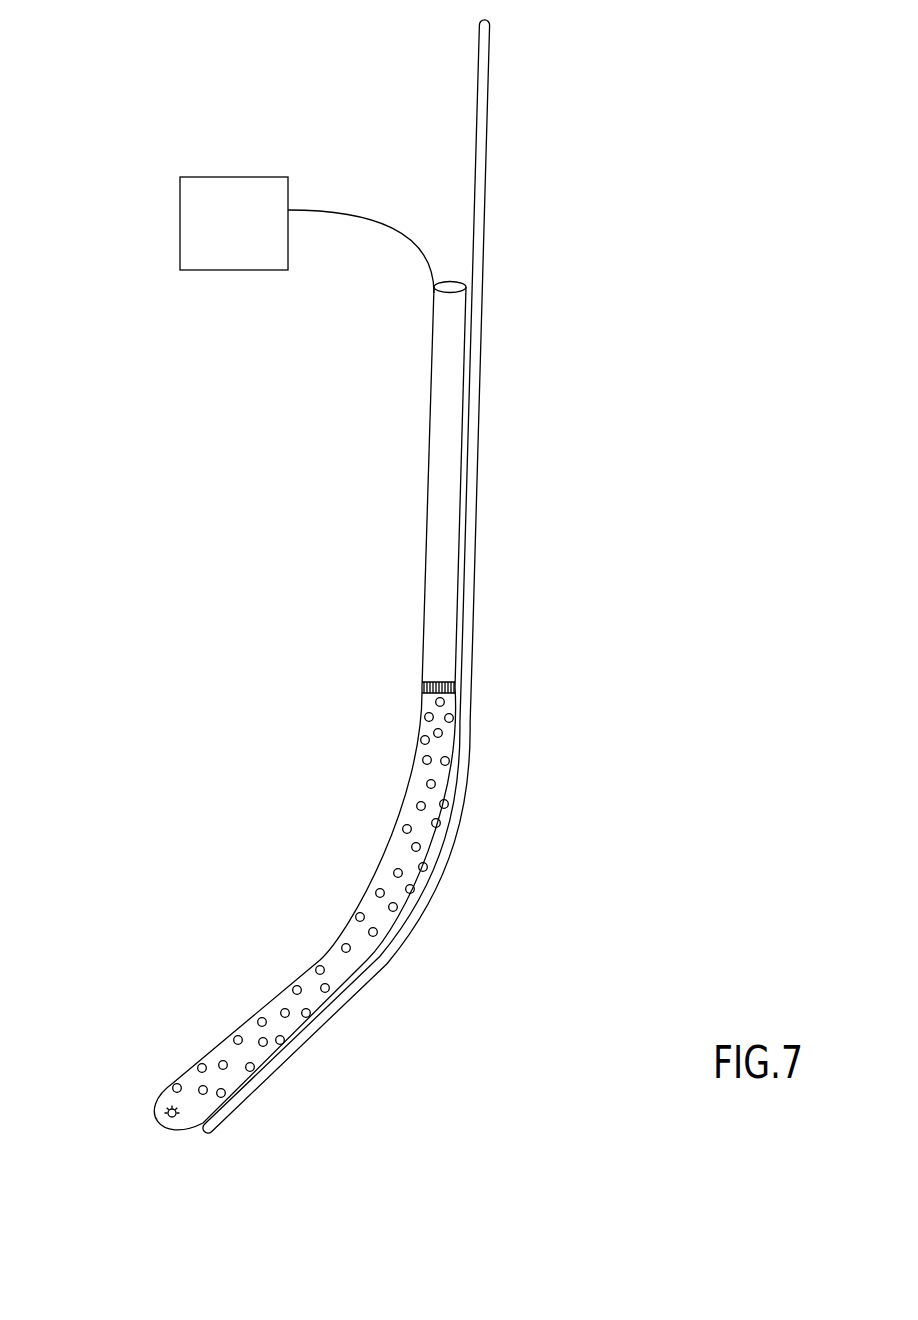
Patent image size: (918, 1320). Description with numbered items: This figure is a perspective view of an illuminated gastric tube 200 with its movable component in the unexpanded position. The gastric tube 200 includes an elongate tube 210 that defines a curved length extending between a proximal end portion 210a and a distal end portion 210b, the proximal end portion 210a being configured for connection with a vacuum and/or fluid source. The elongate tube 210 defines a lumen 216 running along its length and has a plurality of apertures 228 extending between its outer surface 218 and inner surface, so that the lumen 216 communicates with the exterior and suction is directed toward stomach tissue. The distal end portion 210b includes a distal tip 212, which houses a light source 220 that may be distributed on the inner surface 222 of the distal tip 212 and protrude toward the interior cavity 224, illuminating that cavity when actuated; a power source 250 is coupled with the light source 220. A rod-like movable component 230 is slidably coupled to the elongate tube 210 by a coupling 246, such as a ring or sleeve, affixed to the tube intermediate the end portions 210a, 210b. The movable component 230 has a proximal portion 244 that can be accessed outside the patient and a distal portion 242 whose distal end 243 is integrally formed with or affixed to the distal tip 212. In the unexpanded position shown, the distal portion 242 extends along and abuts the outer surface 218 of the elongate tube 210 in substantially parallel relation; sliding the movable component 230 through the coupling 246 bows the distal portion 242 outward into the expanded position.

The illuminated gastric tube 200 is at (329, 650).
The elongate tube 210 is at (254, 691).
The proximal end portion 210a is at (382, 427).
The distal end portion 210b is at (249, 951).
The distal tip 212 is at (160, 1092).
The lumen 216 is at (447, 268).
The outer surface 218 is at (417, 773).
The light source 220 is at (180, 1115).
The inner surface 222 is at (181, 1083).
The interior cavity 224 is at (161, 1108).
The apertures 228 is at (296, 898).
The movable component 230 is at (403, 650).
The distal portion 242 is at (313, 1039).
The distal end 243 is at (190, 1122).
The proximal portion 244 is at (477, 502).
The coupling 246 is at (423, 687).
The power source 250 is at (220, 177).